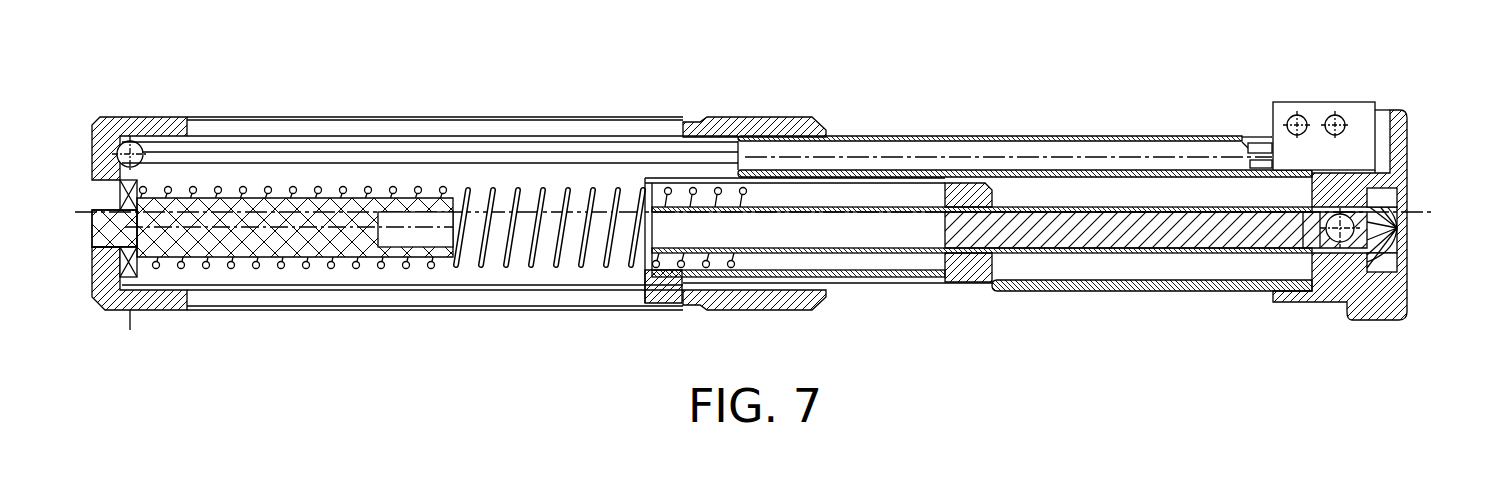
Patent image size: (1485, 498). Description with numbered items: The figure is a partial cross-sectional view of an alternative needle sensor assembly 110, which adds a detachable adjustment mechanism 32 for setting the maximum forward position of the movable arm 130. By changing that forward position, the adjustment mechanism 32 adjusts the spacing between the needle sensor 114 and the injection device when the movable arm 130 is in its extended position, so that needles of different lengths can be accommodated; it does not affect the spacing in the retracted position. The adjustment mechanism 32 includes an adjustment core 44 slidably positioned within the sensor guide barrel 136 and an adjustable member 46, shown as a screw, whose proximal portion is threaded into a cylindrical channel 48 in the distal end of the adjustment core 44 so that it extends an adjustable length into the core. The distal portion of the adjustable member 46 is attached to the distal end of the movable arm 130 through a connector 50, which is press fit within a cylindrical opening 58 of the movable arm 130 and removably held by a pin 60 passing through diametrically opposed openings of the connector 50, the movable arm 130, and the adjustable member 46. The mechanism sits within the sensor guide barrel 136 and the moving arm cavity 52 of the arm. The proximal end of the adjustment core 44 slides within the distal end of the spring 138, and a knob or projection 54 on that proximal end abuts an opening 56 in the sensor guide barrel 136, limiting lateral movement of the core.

The needle sensor assembly 110 is at (580, 70).
The spring 138 is at (495, 186).
The opening 56 is at (657, 255).
The adjustment core 44 is at (854, 193).
The adjustment mechanism 32 is at (914, 233).
The moving arm cavity 52 is at (1218, 190).
The needle sensor 114 is at (1316, 108).
The pin 60 is at (1403, 192).
The connector 50 is at (1401, 237).
The cylindrical opening 58 is at (1402, 284).
The adjustable member 46 is at (1249, 252).
The movable arm 130 is at (1092, 292).
The cylindrical channel 48 is at (868, 258).
The knob or projection 54 is at (667, 308).
The sensor guide barrel 136 is at (613, 295).